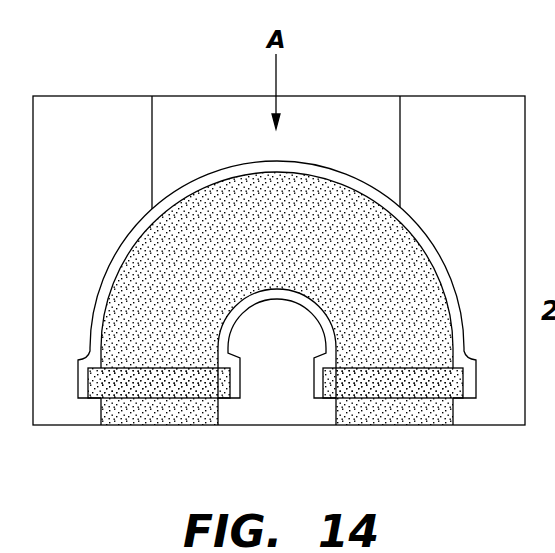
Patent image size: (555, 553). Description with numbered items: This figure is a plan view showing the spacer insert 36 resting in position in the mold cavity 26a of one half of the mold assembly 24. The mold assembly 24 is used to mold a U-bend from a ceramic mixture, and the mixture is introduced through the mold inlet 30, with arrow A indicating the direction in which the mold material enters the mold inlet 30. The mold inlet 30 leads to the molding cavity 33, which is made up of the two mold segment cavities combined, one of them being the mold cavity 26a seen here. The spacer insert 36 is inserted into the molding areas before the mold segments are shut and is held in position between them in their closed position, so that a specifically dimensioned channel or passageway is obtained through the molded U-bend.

The mold assembly 24 is at (488, 84).
The mold inlet 30 is at (378, 105).
The mold cavity 26a is at (99, 290).
The molding cavity 33 is at (225, 343).
The spacer insert 36 is at (383, 400).